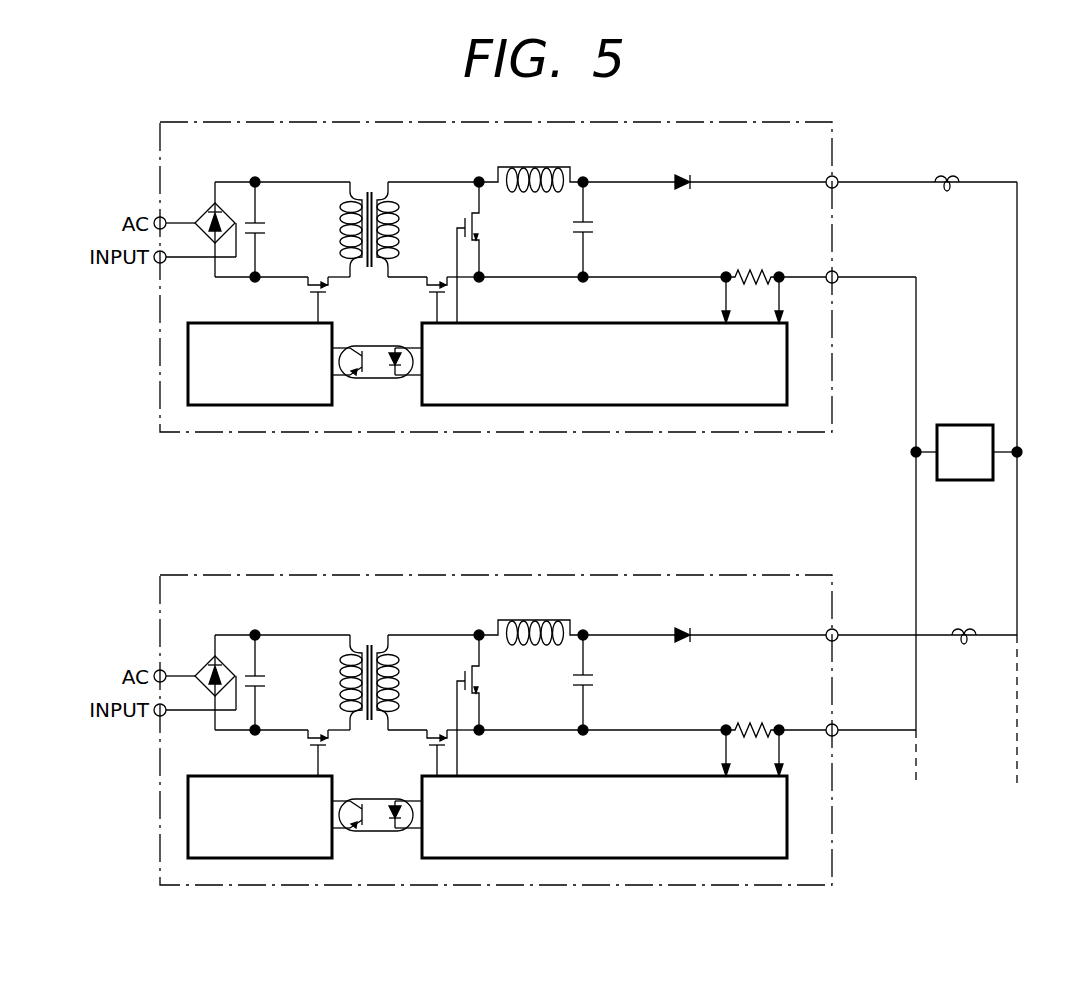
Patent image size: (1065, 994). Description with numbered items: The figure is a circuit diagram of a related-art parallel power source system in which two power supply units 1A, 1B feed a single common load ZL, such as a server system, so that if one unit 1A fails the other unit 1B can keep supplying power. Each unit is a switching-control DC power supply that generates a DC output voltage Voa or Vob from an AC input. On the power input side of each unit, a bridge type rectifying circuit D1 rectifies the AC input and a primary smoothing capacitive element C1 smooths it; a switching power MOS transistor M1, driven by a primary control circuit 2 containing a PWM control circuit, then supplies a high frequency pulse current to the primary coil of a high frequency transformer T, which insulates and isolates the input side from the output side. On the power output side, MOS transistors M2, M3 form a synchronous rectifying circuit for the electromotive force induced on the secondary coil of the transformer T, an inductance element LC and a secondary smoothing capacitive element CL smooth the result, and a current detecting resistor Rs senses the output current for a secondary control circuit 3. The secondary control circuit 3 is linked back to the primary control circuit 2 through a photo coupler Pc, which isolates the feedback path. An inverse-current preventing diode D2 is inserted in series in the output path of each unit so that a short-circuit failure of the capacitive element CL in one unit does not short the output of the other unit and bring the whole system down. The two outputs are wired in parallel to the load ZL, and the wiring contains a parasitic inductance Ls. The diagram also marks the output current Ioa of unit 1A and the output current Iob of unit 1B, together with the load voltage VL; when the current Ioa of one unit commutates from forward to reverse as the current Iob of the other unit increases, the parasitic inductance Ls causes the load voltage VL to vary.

The power supply unit 1A is at (452, 154).
The power supply unit 1B is at (452, 607).
The primary control circuit 2 is at (228, 405).
The secondary control circuit 3 is at (484, 405).
The bridge type rectifying circuit D1 is at (222, 442).
The primary smoothing capacitive element C1 is at (273, 456).
The high frequency transformer T is at (369, 442).
The switching power MOS transistor M1 is at (320, 512).
The MOS transistor M2 is at (437, 512).
The MOS transistor M3 is at (486, 479).
The secondary smoothing inductance element LC is at (531, 394).
The secondary smoothing capacitive element CL is at (568, 456).
The inverse-current preventing diode D2 is at (686, 394).
The current detecting resistor Rs is at (752, 490).
The photo coupler Pc is at (377, 574).
The parasitic inductance Ls is at (954, 395).
The load ZL is at (966, 452).
The load voltage VL is at (1007, 514).
The output current of power supply unit 1A Ioa is at (903, 166).
The output voltage of power supply unit 1A Voa is at (857, 190).
The output current of power supply unit 1B Iob is at (898, 620).
The output voltage of power supply unit 1B Vob is at (857, 643).